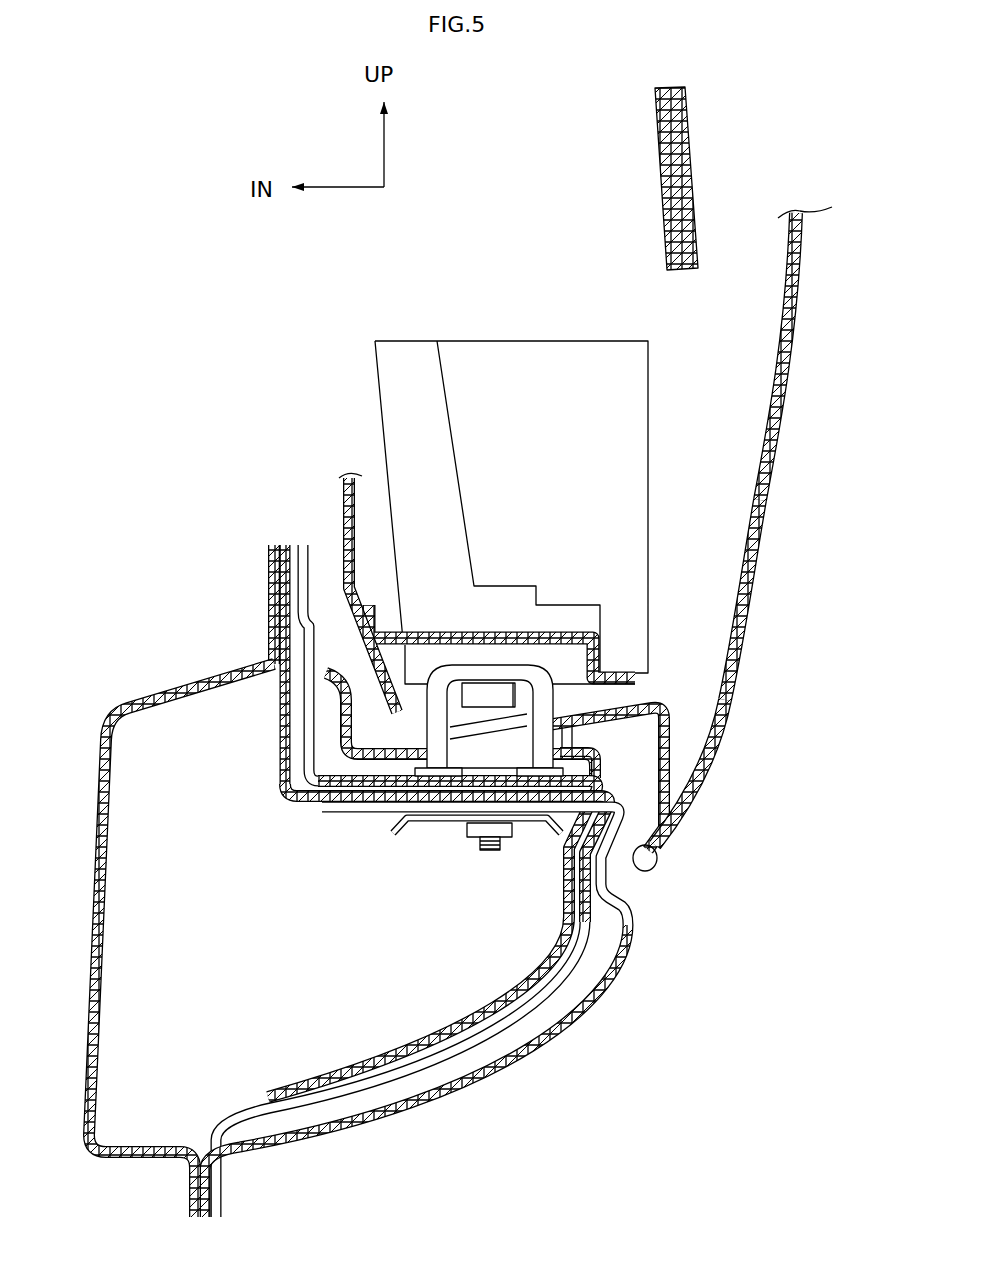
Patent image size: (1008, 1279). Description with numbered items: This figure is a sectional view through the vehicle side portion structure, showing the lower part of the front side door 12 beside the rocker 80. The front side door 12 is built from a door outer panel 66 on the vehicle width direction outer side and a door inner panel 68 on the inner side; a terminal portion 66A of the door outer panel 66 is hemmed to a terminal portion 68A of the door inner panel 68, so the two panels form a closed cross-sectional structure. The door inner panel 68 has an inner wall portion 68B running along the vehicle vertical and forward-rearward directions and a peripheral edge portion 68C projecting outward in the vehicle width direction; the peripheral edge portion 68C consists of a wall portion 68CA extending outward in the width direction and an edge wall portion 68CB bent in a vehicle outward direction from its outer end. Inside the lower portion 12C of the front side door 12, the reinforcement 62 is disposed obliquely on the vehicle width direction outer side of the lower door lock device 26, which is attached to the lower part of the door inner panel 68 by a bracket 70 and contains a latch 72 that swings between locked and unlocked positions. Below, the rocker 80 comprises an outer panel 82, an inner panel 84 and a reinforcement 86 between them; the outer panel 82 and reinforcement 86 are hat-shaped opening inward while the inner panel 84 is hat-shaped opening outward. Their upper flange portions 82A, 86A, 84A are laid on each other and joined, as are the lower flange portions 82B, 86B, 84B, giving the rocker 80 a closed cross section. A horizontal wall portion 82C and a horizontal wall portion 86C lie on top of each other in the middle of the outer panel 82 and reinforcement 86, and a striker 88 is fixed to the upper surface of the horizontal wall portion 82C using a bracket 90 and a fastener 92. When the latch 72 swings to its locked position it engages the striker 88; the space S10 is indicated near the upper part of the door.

The front side door 12 is at (764, 540).
The lower portion 12C is at (735, 700).
The lower door lock device 26 is at (372, 392).
The reinforcement 62 is at (655, 160).
The door outer panel 66 is at (773, 457).
The terminal portion 66A is at (655, 853).
The door inner panel 68 is at (340, 490).
The terminal portion 68A is at (657, 828).
The inner wall portion 68B is at (343, 514).
The peripheral edge portion 68C is at (594, 727).
The wall portion 68CA is at (612, 703).
The edge wall portion 68CB is at (676, 750).
The bracket 70 is at (562, 632).
The latch 72 is at (490, 697).
The rocker 80 is at (562, 1040).
The outer panel 82 is at (487, 1086).
The upper flange portion 82A is at (296, 583).
The lower flange portion 82B is at (222, 1185).
The horizontal wall portion 82C is at (358, 790).
The inner panel 84 is at (110, 958).
The upper flange portion 84A is at (270, 578).
The lower flange portion 84B is at (192, 1200).
The reinforcement 86 is at (390, 1076).
The upper flange portion 86A is at (280, 600).
The lower flange portion 86B is at (198, 1184).
The horizontal wall portion 86C is at (333, 807).
The striker 88 is at (482, 667).
The bracket 90 is at (448, 822).
The fastener 92 is at (513, 842).
The space S10 is at (758, 176).